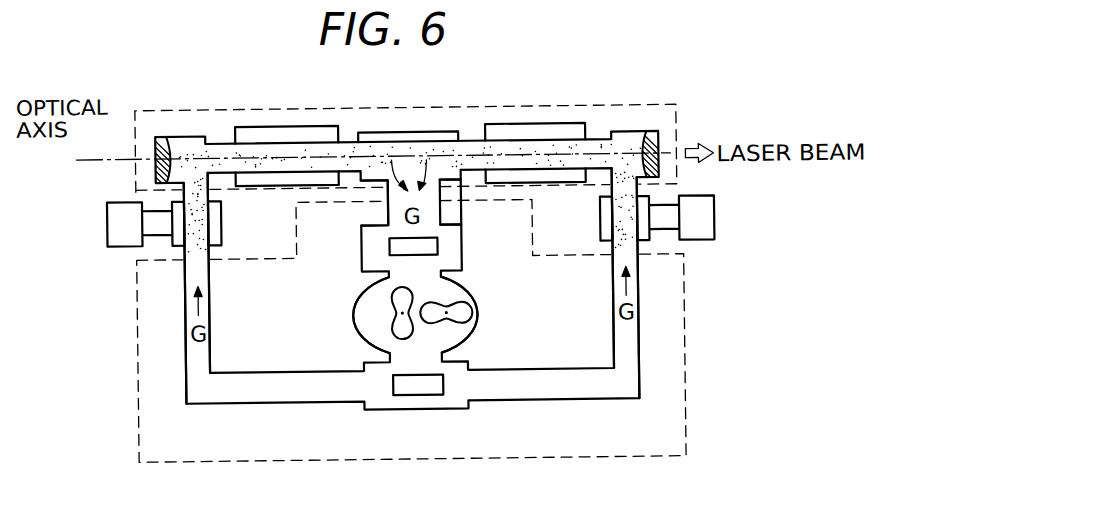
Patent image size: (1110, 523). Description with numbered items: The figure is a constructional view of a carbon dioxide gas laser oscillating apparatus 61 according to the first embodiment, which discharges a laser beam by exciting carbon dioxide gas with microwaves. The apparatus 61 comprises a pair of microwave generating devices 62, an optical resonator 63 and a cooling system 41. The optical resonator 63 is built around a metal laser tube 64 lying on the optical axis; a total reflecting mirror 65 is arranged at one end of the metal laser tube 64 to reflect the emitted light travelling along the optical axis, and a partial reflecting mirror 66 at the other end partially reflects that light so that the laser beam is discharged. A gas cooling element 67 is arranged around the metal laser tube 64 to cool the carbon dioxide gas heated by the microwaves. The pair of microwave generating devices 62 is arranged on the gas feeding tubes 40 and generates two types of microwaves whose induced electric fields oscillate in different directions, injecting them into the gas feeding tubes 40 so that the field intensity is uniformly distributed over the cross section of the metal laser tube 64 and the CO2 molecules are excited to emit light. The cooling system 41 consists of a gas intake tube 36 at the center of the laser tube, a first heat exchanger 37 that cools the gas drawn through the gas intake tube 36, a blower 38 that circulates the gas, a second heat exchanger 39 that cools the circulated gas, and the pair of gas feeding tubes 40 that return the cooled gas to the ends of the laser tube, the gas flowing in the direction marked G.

The gas intake tube 36 is at (438, 212).
The first heat exchanger 37 is at (440, 250).
The blower 38 is at (478, 310).
The second heat exchanger 39 is at (425, 395).
The gas feeding tubes 40 is at (187, 351).
The cooling system 41 is at (685, 318).
The carbon dioxide gas laser oscillating apparatus 61 is at (195, 93).
The microwave generating devices 62 is at (108, 229).
The optical resonator 63 is at (678, 131).
The metal laser tube 64 is at (432, 132).
The total reflecting mirror 65 is at (163, 134).
The partial reflecting mirror 66 is at (650, 133).
The gas cooling element 67 is at (310, 124).